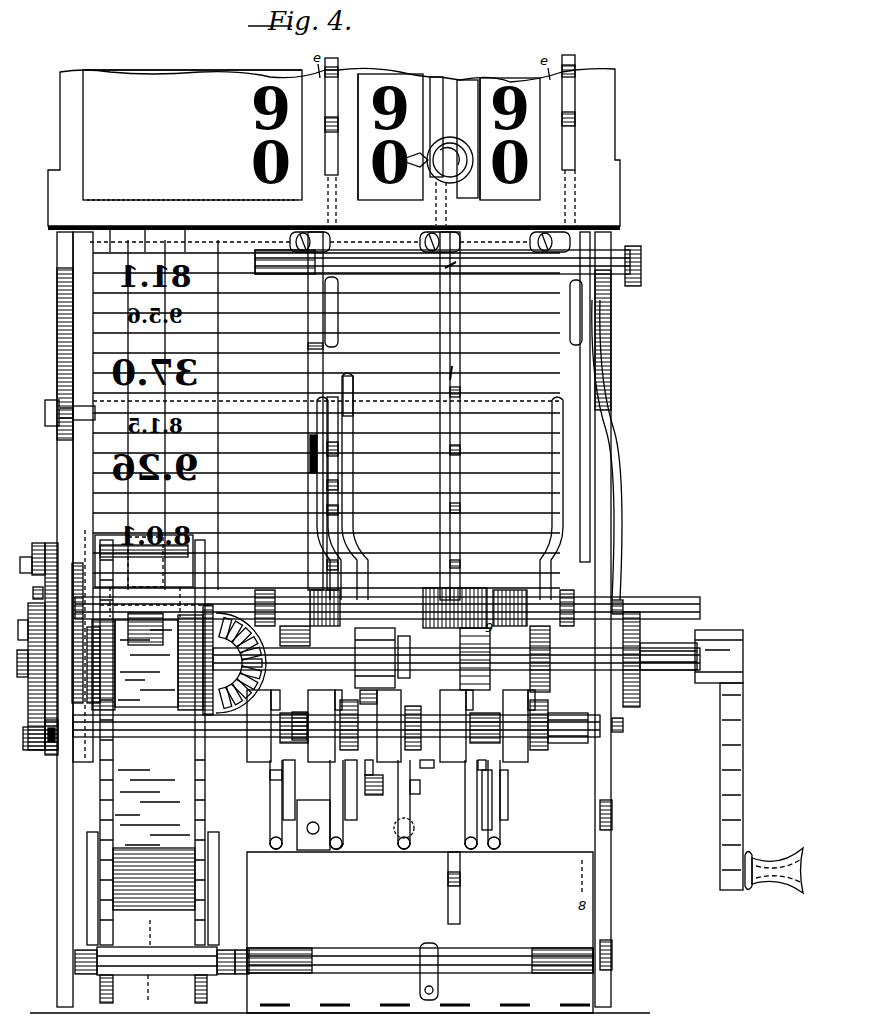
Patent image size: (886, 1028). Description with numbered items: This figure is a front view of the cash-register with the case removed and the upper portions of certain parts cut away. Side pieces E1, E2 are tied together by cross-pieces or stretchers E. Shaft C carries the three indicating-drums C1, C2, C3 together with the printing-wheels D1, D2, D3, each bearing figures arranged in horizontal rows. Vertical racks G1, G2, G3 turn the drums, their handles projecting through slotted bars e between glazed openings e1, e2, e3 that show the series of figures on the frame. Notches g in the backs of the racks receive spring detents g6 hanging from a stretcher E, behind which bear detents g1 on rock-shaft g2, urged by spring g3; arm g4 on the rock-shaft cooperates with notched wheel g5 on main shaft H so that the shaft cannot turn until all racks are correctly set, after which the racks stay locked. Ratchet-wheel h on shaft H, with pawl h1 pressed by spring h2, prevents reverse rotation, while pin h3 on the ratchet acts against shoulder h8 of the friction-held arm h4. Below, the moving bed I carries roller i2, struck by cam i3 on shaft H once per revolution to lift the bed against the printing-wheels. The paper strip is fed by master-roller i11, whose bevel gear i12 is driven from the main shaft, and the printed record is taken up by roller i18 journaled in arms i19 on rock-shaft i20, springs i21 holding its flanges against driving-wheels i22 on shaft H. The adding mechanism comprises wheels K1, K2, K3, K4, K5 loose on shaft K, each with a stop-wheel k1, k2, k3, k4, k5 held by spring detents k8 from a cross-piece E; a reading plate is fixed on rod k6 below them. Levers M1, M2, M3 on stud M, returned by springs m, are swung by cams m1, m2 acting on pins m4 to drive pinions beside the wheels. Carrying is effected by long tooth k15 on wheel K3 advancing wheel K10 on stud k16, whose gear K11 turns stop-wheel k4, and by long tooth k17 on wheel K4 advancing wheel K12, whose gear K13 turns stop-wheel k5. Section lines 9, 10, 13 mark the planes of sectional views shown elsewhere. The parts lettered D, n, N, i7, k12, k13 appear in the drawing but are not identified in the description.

The bar e is at (468, 86).
The opening e1 is at (496, 90).
The opening e2 is at (398, 76).
The opening e3 is at (203, 78).
The rack G1 is at (575, 62).
The rack G2 is at (448, 918).
The rack G3 is at (338, 66).
The printing-wheel D1 is at (108, 230).
The printing-wheel D2 is at (141, 230).
The printing-wheel D3 is at (181, 230).
The type carrier D is at (144, 561).
The notch g is at (484, 895).
The detent g1 is at (582, 310).
The rock-shaft g2 is at (616, 262).
The spring g3 is at (300, 236).
The arm g4 is at (622, 468).
The notched wheel g5 is at (640, 700).
The detent g6 is at (590, 348).
The cross-piece E is at (66, 245).
The side piece E1 is at (611, 378).
The side piece E2 is at (57, 342).
The shaft C is at (48, 408).
The indicating-drum C1 is at (507, 426).
The indicating-drum C2 is at (400, 426).
The indicating-drum C3 is at (265, 425).
The stud M is at (387, 605).
The lever M1 is at (551, 692).
The lever M2 is at (350, 382).
The lever M3 is at (310, 430).
The spring m is at (456, 646).
The cam m1 is at (516, 657).
The cam m2 is at (375, 658).
The pin m4 is at (308, 634).
The lever n is at (400, 658).
The ratchet-wheel h is at (28, 684).
The pawl h1 is at (33, 712).
The spring h2 is at (40, 750).
The pin h3 is at (32, 620).
The arm h4 is at (45, 556).
The shoulder h8 is at (33, 592).
The section line 9 is at (30, 645).
The section line 10 is at (147, 754).
The section line 13 is at (85, 632).
The moving bed I is at (145, 562).
The roller i2 is at (148, 613).
The cam i3 is at (147, 662).
The pin i7 is at (414, 830).
The master-roller i11 is at (195, 650).
The bevel gear-wheel i12 is at (248, 645).
The roller i18 is at (162, 900).
The arm i19 is at (90, 868).
The rock-shaft i20 is at (166, 972).
The spring i21 is at (88, 974).
The driving-wheel i22 is at (214, 989).
The shaft K is at (566, 730).
The adding-wheel K1 is at (510, 768).
The adding-wheel K2 is at (449, 732).
The adding-wheel K3 is at (402, 732).
The adding-wheel K4 is at (321, 745).
The adding-wheel K5 is at (259, 735).
The wheel K10 is at (384, 789).
The gear-wheel K11 is at (356, 784).
The toothed wheel K12 is at (313, 810).
The gear-wheel K13 is at (288, 768).
The stop-wheel k1 is at (524, 689).
The stop-wheel k2 is at (472, 689).
The stop-wheel k3 is at (485, 795).
The stop-wheel k4 is at (324, 690).
The stop-wheel k5 is at (280, 690).
The rod k6 is at (366, 948).
The detent k8 is at (466, 801).
The pawl k12 is at (489, 756).
The pawl k13 is at (267, 786).
The long tooth k15 is at (366, 690).
The stud k16 is at (383, 772).
The long tooth k17 is at (299, 714).
The lever N is at (484, 790).
The main shaft H is at (676, 645).